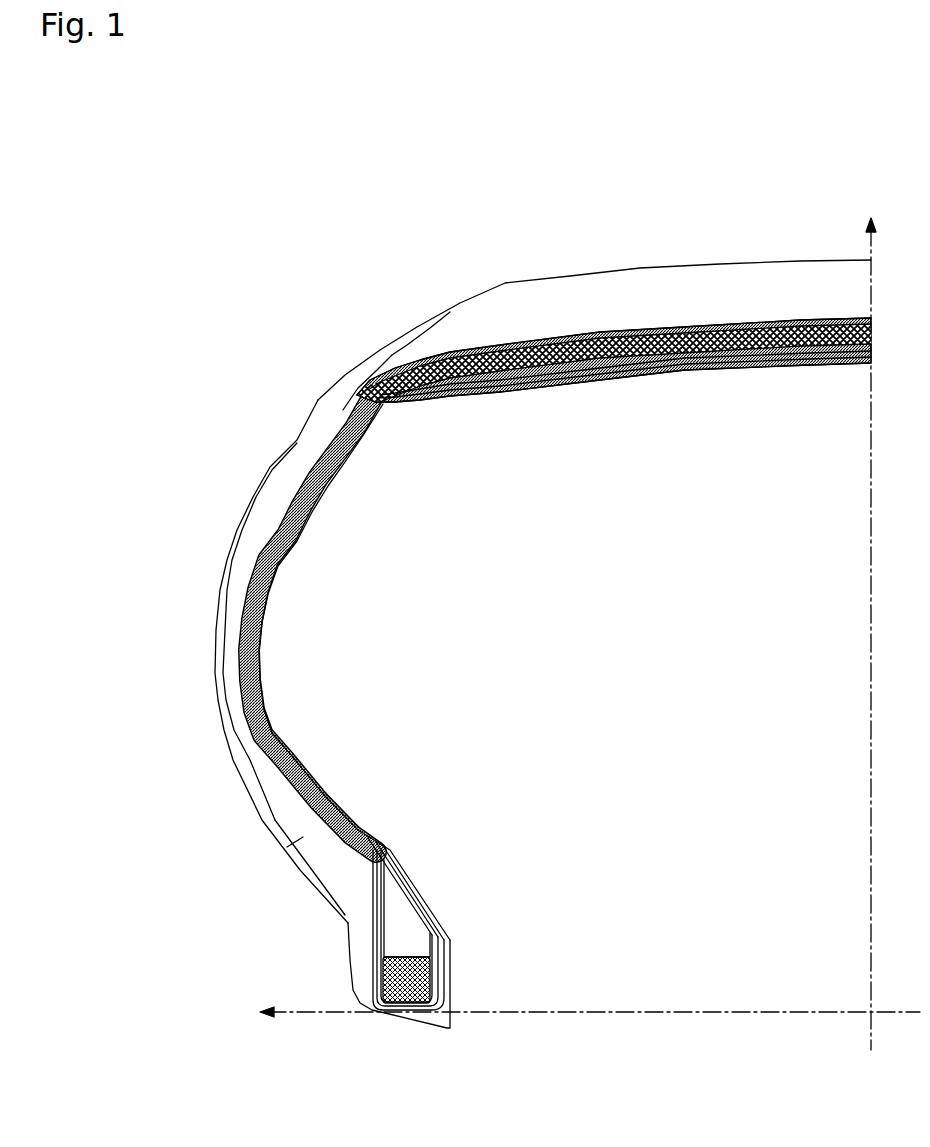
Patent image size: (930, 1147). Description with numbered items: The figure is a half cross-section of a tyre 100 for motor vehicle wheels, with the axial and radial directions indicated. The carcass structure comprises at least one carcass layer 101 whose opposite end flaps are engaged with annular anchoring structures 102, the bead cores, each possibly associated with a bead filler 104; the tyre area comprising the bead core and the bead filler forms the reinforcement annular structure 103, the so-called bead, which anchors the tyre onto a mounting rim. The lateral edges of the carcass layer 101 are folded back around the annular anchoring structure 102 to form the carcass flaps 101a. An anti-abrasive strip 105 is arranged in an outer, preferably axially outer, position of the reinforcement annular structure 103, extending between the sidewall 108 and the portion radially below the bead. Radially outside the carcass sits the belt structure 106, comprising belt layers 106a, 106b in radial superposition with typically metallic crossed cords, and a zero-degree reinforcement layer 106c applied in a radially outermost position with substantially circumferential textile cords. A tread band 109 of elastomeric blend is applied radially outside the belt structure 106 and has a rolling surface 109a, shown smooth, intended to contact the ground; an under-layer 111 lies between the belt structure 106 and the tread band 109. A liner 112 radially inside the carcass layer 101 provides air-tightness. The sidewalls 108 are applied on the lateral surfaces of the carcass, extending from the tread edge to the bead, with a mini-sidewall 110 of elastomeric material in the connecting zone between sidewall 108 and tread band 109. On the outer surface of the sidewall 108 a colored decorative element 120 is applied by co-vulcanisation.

The tyre 100 is at (258, 446).
The carcass layer 101 is at (350, 455).
The carcass flaps 101a is at (345, 810).
The annular anchoring structure 102 is at (390, 1016).
The reinforcement annular structure 103 is at (441, 951).
The bead filler 104 is at (402, 940).
The anti-abrasive strip 105 is at (283, 853).
The belt structure 106 is at (755, 326).
The belt layer 106a is at (688, 369).
The belt layer 106b is at (810, 364).
The zero-degree reinforcement layer 106c is at (570, 384).
The sidewall 108 is at (235, 590).
The tread band 109 is at (593, 302).
The rolling surface 109a is at (505, 286).
The mini-sidewall 110 is at (343, 410).
The under-layer 111 is at (430, 358).
The liner 112 is at (262, 600).
The decorative element 120 is at (230, 530).